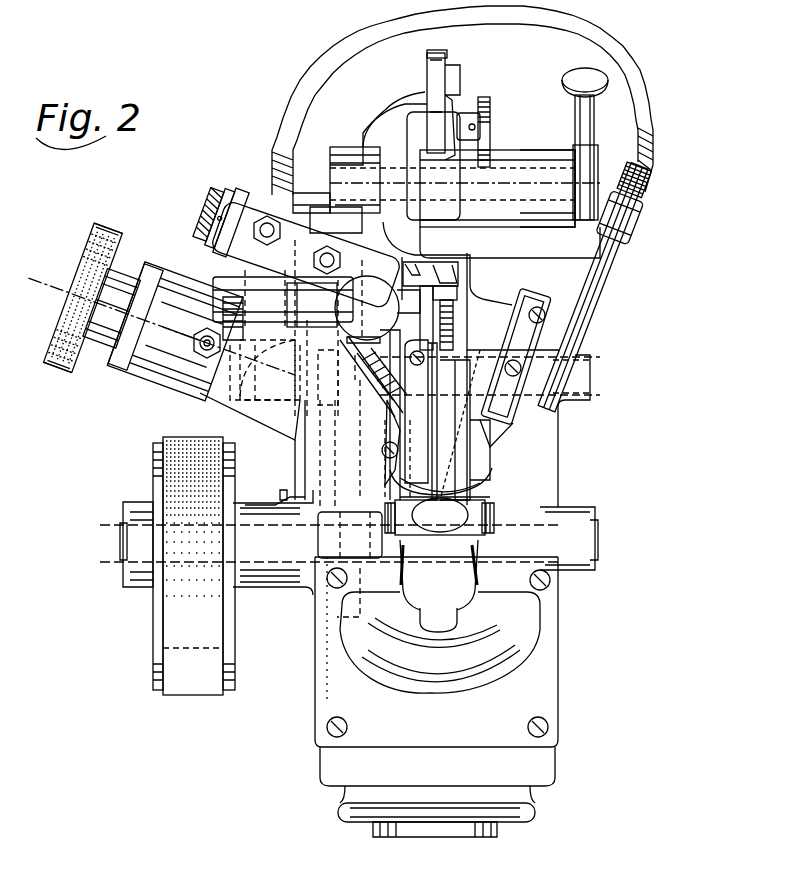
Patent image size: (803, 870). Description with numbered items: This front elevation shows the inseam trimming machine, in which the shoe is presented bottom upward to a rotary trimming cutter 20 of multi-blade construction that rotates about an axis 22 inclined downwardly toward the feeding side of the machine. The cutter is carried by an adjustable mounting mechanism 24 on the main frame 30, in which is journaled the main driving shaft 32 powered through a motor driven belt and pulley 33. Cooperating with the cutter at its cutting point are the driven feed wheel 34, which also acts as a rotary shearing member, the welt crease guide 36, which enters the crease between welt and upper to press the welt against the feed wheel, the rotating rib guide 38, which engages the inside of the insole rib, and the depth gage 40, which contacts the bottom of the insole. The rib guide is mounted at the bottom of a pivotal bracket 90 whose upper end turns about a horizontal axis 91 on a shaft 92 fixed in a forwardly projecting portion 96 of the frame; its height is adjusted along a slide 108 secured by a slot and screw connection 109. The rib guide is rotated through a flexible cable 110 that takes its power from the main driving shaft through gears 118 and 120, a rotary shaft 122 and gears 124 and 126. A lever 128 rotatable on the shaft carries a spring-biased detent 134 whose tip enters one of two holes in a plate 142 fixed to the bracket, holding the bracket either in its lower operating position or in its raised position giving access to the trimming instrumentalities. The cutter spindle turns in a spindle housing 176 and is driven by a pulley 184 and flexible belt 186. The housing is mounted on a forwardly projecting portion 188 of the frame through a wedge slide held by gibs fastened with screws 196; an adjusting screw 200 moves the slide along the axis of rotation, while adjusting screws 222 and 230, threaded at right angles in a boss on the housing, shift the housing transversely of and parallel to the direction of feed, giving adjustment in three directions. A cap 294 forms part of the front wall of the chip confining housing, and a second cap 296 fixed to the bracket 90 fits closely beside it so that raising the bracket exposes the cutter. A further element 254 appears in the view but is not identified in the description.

The rotary trimming cutter 20 is at (425, 480).
The axis 22 is at (52, 284).
The adjustable mounting mechanism 24 is at (196, 259).
The main frame 30 is at (555, 440).
The main driving shaft 32 is at (287, 588).
The motor driven belt and pulley 33 is at (152, 597).
The driven feed wheel 34 is at (492, 468).
The welt crease guide 36 is at (448, 523).
The rotating rib guide 38 is at (490, 493).
The depth gage 40 is at (490, 487).
The pivotal bracket 90 is at (562, 255).
The horizontal axis 91 is at (307, 184).
The shaft 92 is at (514, 166).
The forwardly projecting portion 96 is at (503, 150).
The slide 108 is at (525, 323).
The slot and screw connection 109 is at (465, 425).
The flexible cable 110 is at (620, 40).
The gear 118 is at (230, 377).
The gear 120 is at (290, 440).
The rotary shaft 122 is at (243, 425).
The gear 124 is at (330, 458).
The gear 126 is at (292, 480).
The lever 128 is at (428, 63).
The spring-biased detent 134 is at (490, 112).
The plate 142 is at (370, 140).
The spindle housing 176 is at (142, 380).
The pulley 184 is at (82, 262).
The flexible belt 186 is at (100, 226).
The forwardly projecting portion 188 is at (336, 220).
The screws 196 is at (340, 262).
The adjusting screw 200 is at (214, 196).
The adjusting screw 222 is at (388, 312).
The adjusting screw 230 is at (453, 322).
The knob 254 is at (589, 112).
The cap 294 is at (405, 412).
The second cap 296 is at (500, 385).